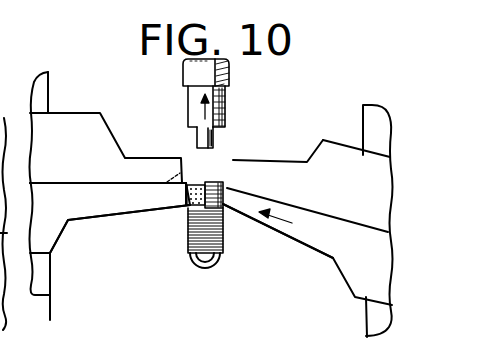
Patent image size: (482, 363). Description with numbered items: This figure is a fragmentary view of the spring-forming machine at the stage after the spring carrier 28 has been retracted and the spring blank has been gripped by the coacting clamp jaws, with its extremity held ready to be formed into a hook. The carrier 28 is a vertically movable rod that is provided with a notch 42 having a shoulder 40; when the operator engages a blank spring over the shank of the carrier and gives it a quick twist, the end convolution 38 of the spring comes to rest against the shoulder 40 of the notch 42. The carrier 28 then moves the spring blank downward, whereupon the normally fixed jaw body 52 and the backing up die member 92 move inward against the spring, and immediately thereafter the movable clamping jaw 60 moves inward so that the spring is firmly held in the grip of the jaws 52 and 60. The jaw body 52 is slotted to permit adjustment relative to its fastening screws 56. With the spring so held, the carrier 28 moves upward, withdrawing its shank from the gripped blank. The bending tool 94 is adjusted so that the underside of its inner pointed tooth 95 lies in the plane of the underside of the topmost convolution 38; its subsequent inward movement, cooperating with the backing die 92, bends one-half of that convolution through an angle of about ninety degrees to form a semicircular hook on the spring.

The carrier 28 is at (195, 98).
The notch 42 is at (227, 112).
The shoulder 40 is at (190, 128).
The fastening screws 56 is at (214, 143).
The backing up die member 92 is at (77, 133).
The bending tool 94 is at (298, 167).
The jaw body 52 is at (98, 203).
The end convolution 38 is at (215, 182).
The inner pointed tooth 95 is at (233, 162).
The movable clamping jaw 60 is at (317, 233).